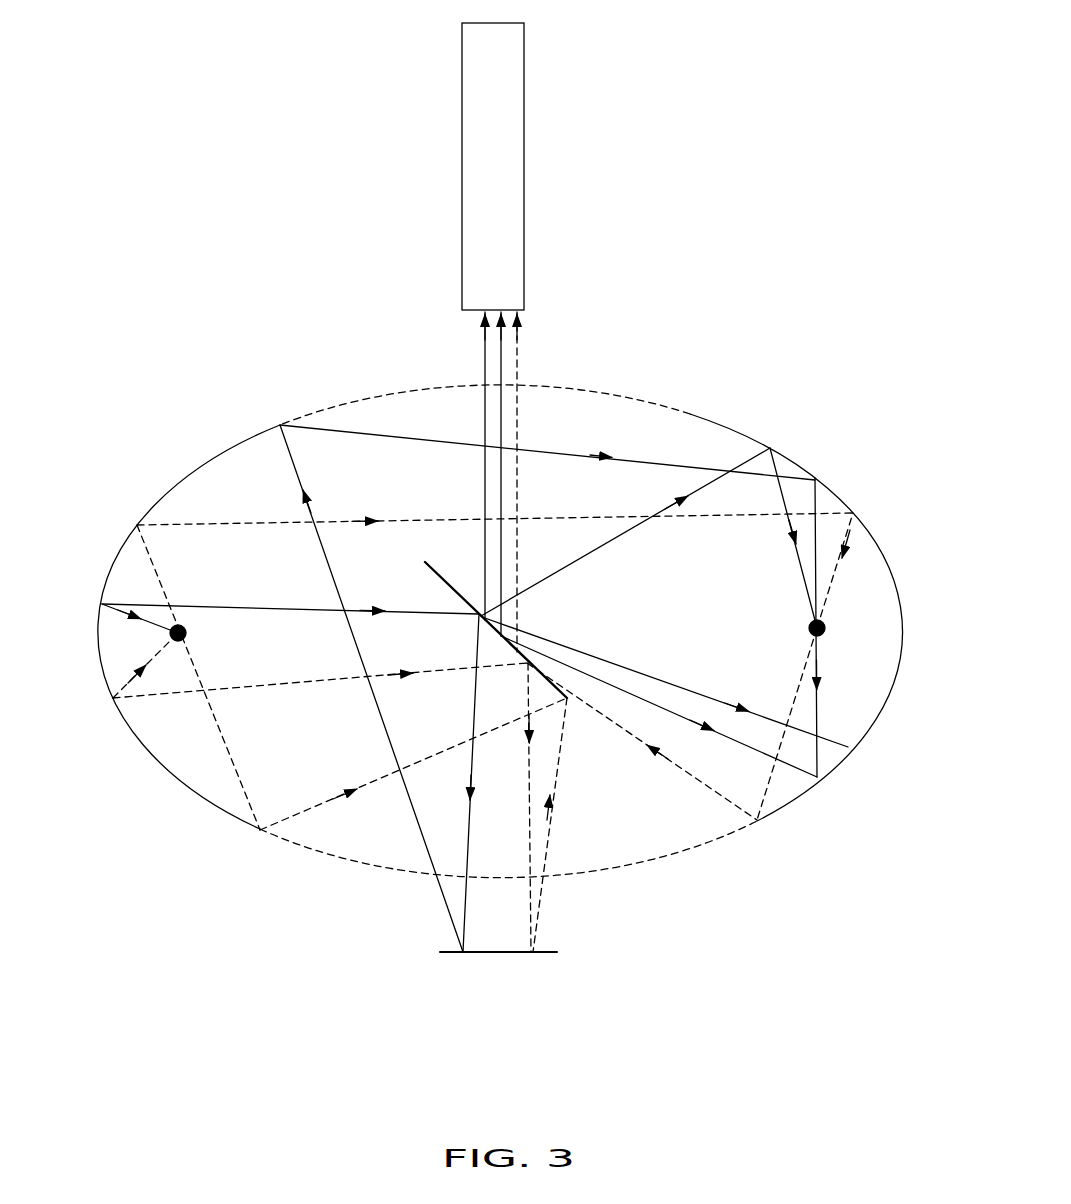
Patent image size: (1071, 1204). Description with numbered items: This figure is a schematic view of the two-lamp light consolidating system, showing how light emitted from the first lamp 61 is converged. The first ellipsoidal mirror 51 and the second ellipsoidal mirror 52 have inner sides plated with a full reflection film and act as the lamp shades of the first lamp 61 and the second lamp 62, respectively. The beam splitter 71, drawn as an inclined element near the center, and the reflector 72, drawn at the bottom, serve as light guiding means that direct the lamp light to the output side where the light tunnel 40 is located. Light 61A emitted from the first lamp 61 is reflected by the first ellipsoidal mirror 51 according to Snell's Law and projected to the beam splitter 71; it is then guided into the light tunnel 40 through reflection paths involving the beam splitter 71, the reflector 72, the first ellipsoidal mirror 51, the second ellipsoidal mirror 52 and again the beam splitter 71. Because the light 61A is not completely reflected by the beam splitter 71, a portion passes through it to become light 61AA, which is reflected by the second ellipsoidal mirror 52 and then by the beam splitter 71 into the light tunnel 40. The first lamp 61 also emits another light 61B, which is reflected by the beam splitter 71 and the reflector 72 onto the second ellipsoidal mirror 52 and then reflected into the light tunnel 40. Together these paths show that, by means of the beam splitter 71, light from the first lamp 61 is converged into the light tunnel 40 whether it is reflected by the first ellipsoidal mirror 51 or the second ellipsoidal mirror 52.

The light tunnel 40 is at (462, 123).
The first ellipsoidal mirror 51 is at (199, 445).
The second ellipsoidal mirror 52 is at (800, 440).
The first lamp 61 is at (186, 634).
The light 61A is at (645, 460).
The light 61AA is at (487, 505).
The light 61B is at (519, 358).
The second lamp 62 is at (823, 622).
The beam splitter 71 is at (567, 698).
The reflector 72 is at (545, 953).